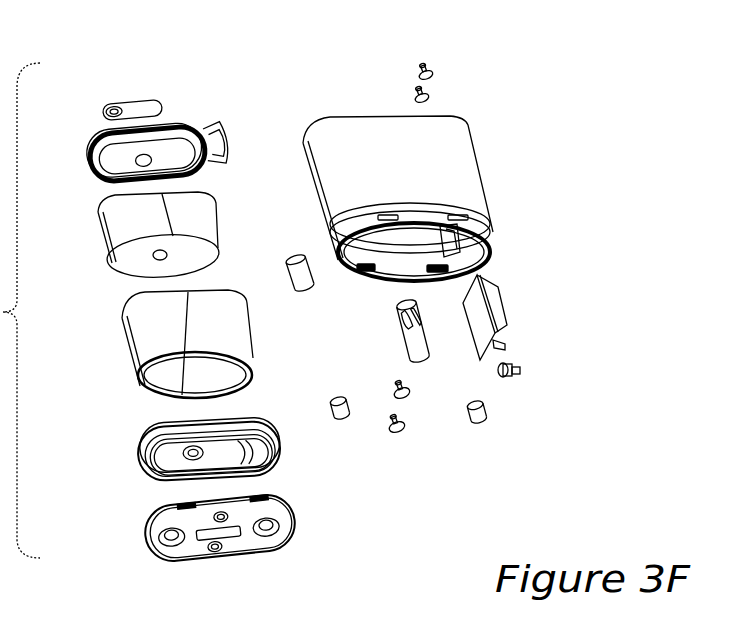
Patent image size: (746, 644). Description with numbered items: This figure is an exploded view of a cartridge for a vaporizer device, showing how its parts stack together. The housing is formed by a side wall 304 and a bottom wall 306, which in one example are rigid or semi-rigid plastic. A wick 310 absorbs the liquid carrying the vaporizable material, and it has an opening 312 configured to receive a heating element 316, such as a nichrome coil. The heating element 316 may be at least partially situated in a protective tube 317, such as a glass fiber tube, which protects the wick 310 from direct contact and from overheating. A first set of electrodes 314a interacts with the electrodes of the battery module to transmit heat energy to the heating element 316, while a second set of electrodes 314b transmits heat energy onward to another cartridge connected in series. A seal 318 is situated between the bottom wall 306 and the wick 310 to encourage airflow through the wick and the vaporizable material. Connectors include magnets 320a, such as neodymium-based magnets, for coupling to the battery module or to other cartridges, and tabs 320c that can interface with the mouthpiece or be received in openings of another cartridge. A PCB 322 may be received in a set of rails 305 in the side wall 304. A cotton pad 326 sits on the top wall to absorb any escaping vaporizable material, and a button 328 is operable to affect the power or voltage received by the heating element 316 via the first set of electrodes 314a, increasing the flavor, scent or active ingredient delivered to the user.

The side wall 304 is at (138, 337).
The set of rails 305 is at (440, 242).
The bottom wall 306 is at (108, 163).
The wick 310 is at (117, 230).
The opening 312 is at (146, 262).
The first set of electrodes 314a is at (412, 397).
The second set of electrodes 314b is at (430, 97).
The heating element 316 is at (415, 343).
The protective tube 317 is at (303, 260).
The seal 318 is at (143, 452).
The magnets 320a is at (487, 420).
The tabs 320c is at (447, 207).
The PCB 322 is at (503, 312).
The cotton pad 326 is at (127, 108).
The button 328 is at (507, 357).